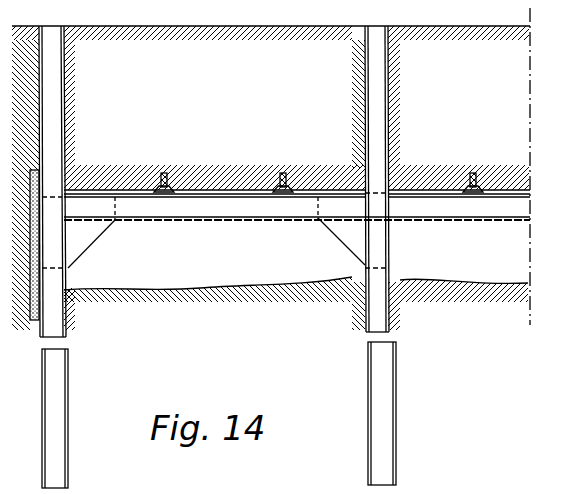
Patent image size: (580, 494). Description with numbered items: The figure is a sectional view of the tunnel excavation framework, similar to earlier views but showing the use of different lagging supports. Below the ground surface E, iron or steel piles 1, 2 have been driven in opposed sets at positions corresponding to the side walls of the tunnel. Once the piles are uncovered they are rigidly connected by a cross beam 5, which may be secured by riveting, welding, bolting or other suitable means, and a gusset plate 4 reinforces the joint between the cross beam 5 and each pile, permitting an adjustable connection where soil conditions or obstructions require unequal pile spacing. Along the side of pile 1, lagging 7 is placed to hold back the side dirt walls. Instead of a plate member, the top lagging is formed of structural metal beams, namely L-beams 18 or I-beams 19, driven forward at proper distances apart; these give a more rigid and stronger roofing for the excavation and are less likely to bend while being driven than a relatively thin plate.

The pile 1 is at (55, 386).
The pile 2 is at (380, 372).
The gusset plate 4 is at (88, 237).
The cross beam 5 is at (232, 208).
The lagging 7 is at (45, 248).
The L-beam 18 is at (282, 172).
The I-beam 19 is at (473, 174).
The ground surface E is at (212, 22).